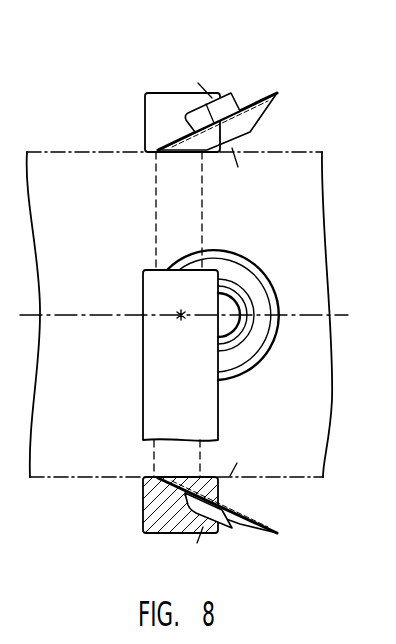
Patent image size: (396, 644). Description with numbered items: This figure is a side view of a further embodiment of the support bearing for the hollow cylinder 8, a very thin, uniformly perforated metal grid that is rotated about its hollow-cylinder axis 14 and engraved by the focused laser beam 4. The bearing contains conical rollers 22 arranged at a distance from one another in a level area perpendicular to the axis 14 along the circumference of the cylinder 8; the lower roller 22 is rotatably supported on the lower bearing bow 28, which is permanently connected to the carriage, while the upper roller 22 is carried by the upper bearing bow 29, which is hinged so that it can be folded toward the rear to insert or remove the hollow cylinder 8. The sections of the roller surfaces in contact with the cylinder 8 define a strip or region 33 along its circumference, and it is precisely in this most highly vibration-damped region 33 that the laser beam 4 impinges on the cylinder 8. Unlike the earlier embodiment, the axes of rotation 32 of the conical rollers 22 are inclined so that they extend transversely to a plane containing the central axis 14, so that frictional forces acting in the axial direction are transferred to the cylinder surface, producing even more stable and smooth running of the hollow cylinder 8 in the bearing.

The focused laser beam 4 is at (181, 320).
The hollow cylinder 8 is at (80, 151).
The hollow-cylinder axis 14 is at (328, 345).
The conical roller 22 is at (270, 112).
The lower bearing bow 28 is at (150, 347).
The upper bearing bow 29 is at (172, 101).
The axis of rotation 32 is at (208, 95).
The strip or region 33 is at (204, 205).